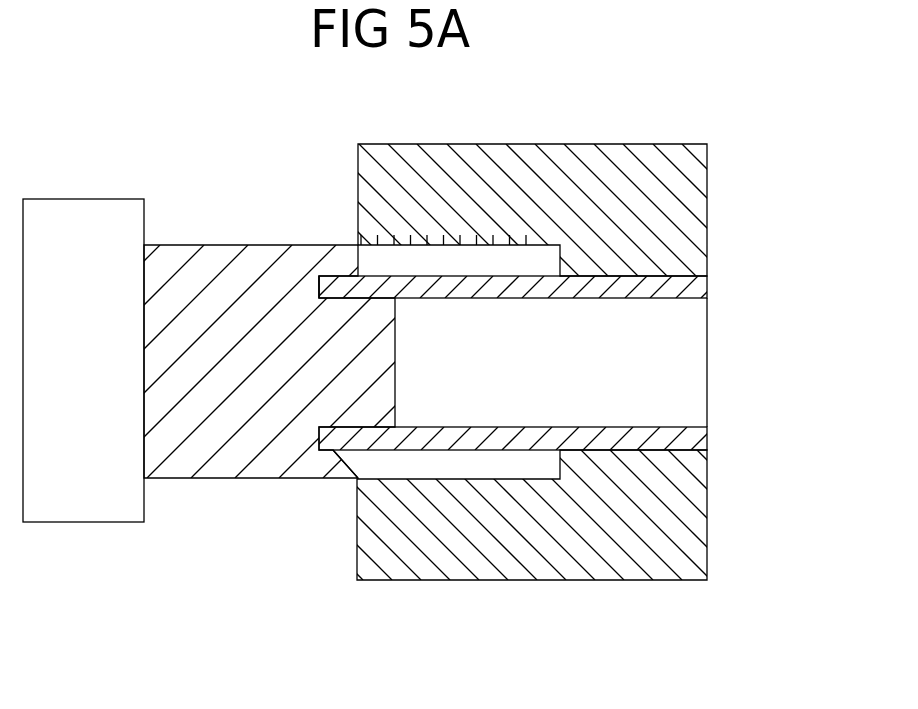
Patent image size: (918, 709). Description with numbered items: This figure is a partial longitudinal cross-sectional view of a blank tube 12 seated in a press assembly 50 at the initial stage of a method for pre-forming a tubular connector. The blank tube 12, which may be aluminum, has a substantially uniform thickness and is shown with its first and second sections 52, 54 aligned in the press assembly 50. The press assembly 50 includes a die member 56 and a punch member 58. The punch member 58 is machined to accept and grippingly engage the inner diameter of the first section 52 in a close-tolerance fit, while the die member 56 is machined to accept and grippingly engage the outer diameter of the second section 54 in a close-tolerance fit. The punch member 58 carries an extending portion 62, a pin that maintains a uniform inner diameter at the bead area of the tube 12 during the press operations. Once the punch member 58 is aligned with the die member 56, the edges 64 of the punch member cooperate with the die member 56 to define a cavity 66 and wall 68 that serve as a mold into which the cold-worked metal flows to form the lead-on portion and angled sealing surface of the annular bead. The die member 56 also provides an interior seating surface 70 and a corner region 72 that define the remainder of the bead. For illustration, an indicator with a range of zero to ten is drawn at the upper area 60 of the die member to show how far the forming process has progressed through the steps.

The blank tube 12 is at (690, 287).
The press assembly 50 is at (760, 338).
The first section 52 is at (370, 480).
The second section 54 is at (672, 480).
The die member 56 is at (682, 166).
The punch member 58 is at (110, 218).
The upper area 60 is at (436, 190).
The extending portion 62 is at (372, 363).
The edges 64 is at (348, 463).
The cavity 66 is at (318, 288).
The wall 68 is at (345, 258).
The interior seating surface 70 is at (560, 452).
The corner region 72 is at (573, 448).